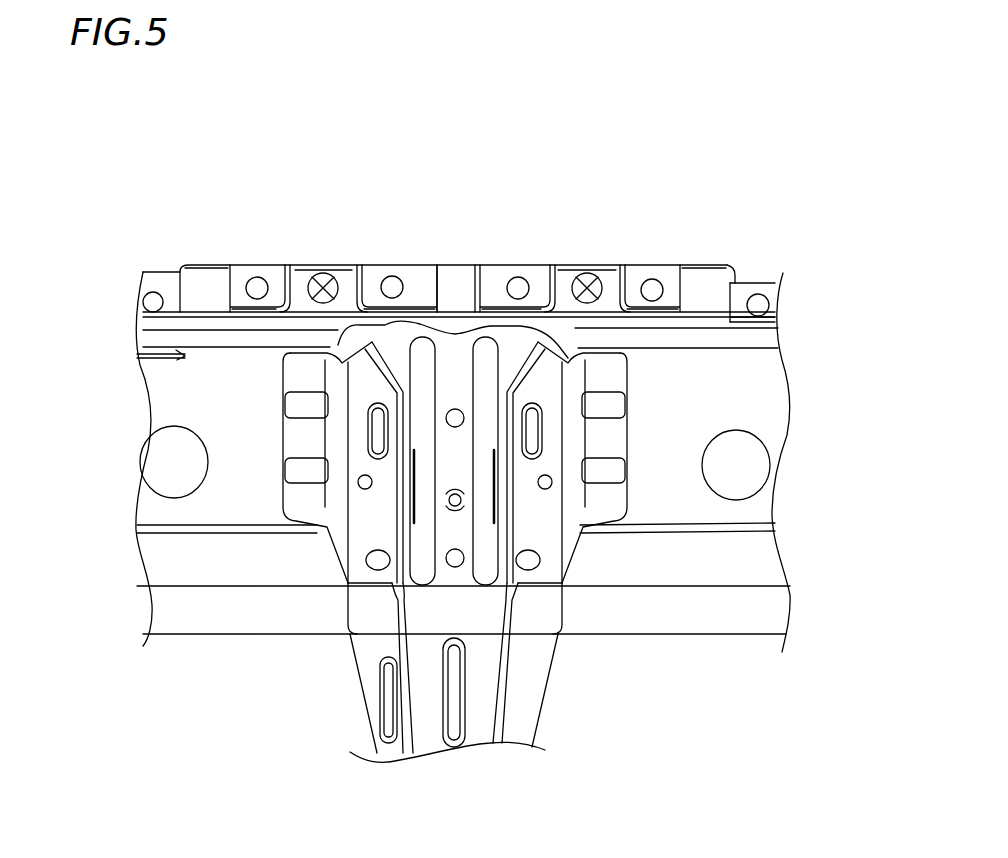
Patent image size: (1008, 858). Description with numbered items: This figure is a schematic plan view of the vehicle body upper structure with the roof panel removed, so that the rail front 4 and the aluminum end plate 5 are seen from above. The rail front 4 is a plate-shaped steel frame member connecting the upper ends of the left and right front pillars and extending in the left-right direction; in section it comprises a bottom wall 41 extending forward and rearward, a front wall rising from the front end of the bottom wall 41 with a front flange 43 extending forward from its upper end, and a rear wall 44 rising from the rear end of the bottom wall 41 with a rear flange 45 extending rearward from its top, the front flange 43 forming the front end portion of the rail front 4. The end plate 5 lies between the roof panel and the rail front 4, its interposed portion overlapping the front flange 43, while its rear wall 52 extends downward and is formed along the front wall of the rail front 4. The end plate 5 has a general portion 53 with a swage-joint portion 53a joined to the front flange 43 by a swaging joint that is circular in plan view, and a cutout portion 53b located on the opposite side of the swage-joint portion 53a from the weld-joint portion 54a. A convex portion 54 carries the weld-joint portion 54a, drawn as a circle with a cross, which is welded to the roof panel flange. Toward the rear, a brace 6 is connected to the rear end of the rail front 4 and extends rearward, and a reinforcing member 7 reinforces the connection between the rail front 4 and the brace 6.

The rail front 4 is at (657, 483).
The end plate 5 is at (473, 277).
The brace 6 is at (363, 648).
The reinforcing member 7 is at (540, 533).
The bottom wall 41 is at (763, 408).
The front flange 43 is at (713, 283).
The rear wall 44 is at (760, 567).
The rear flange 45 is at (762, 610).
The rear wall 52 is at (180, 352).
The general portion 53 is at (240, 277).
The swage-joint portion 53a is at (262, 280).
The cutout portion 53b is at (230, 292).
The convex portion 54 is at (351, 283).
The weld-joint portion 54a is at (317, 275).